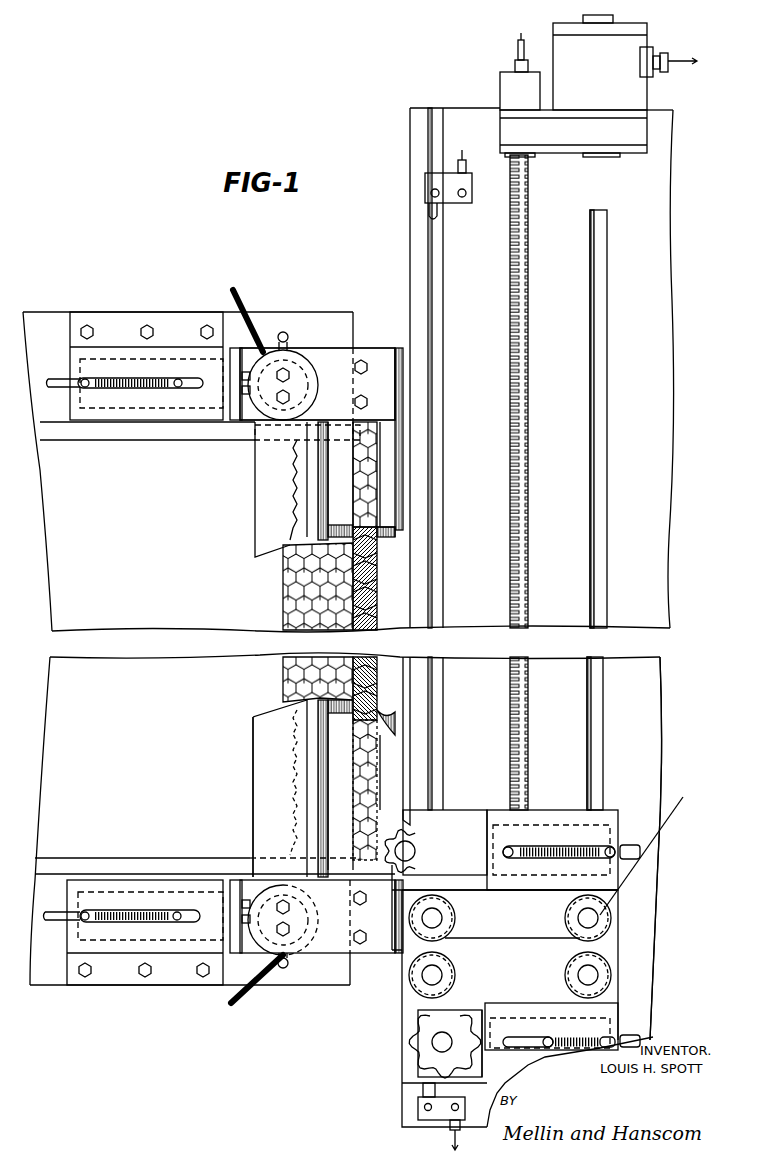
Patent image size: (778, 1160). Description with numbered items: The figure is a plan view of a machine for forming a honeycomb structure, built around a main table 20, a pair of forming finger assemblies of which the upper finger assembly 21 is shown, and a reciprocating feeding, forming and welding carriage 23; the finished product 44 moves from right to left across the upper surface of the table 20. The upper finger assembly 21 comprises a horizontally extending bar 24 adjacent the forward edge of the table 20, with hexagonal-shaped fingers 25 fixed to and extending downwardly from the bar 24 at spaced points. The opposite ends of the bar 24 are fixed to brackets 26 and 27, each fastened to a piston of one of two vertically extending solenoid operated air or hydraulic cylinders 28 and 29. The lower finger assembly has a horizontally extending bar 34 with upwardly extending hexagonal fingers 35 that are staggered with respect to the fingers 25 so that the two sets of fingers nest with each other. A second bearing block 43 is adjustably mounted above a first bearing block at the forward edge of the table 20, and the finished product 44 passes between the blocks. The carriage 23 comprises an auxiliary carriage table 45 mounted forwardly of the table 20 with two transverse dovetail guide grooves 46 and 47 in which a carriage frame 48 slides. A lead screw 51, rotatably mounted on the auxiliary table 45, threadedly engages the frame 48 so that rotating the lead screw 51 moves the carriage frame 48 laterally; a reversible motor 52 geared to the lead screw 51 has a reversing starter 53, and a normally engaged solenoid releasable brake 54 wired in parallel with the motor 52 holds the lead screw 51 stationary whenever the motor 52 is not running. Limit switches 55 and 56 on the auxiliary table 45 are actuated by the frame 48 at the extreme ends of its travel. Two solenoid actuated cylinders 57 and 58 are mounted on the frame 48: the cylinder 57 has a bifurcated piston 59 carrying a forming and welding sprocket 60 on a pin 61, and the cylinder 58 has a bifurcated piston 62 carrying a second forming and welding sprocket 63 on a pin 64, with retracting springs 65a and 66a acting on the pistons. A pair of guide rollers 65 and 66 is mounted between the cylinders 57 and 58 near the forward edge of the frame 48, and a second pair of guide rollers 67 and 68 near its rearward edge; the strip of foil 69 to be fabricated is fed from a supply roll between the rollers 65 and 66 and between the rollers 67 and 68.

The table 20 is at (145, 597).
The upper finger assembly 21 is at (322, 334).
The reciprocating feeding, forming and welding carriage 23 is at (631, 934).
The bar 24 is at (388, 434).
The hexagonal-shaped fingers 25 is at (365, 500).
The bracket 26 is at (383, 356).
The bracket 27 is at (377, 948).
The solenoid operated air or hydraulic cylinder 28 is at (290, 365).
The solenoid operated air or hydraulic cylinder 29 is at (300, 935).
The bar 34 is at (400, 715).
The hexagonal fingers 35 is at (376, 592).
The second bearing block 43 is at (253, 745).
The finished product 44 is at (283, 587).
The auxiliary carriage table 45 is at (651, 983).
The dovetail guide groove 46 is at (443, 503).
The dovetail guide groove 47 is at (603, 450).
The carriage frame 48 is at (620, 965).
The lead screw 51 is at (530, 372).
The reversible motor 52 is at (628, 48).
The reversing starter 53 is at (655, 56).
The solenoid releasable brake 54 is at (500, 80).
The limit switch 55 is at (434, 1120).
The limit switch 56 is at (425, 193).
The solenoid actuated air or hydraulic cylinder 57 is at (598, 830).
The solenoid actuated air or hydraulic cylinder 58 is at (610, 1016).
The piston 59 is at (457, 851).
The forming and welding sprocket 60 is at (410, 816).
The pin 61 is at (413, 848).
The bifurcated piston 62 is at (478, 1022).
The second forming and welding sprocket 63 is at (455, 1010).
The pin 64 is at (432, 1042).
The guide roller 65 is at (575, 916).
The retracting spring 65a is at (535, 850).
The guide roller 66 is at (575, 966).
The retracting spring 66a is at (560, 1038).
The guide roller 67 is at (455, 921).
The guide roller 68 is at (447, 968).
The strip of foil 69 is at (680, 840).